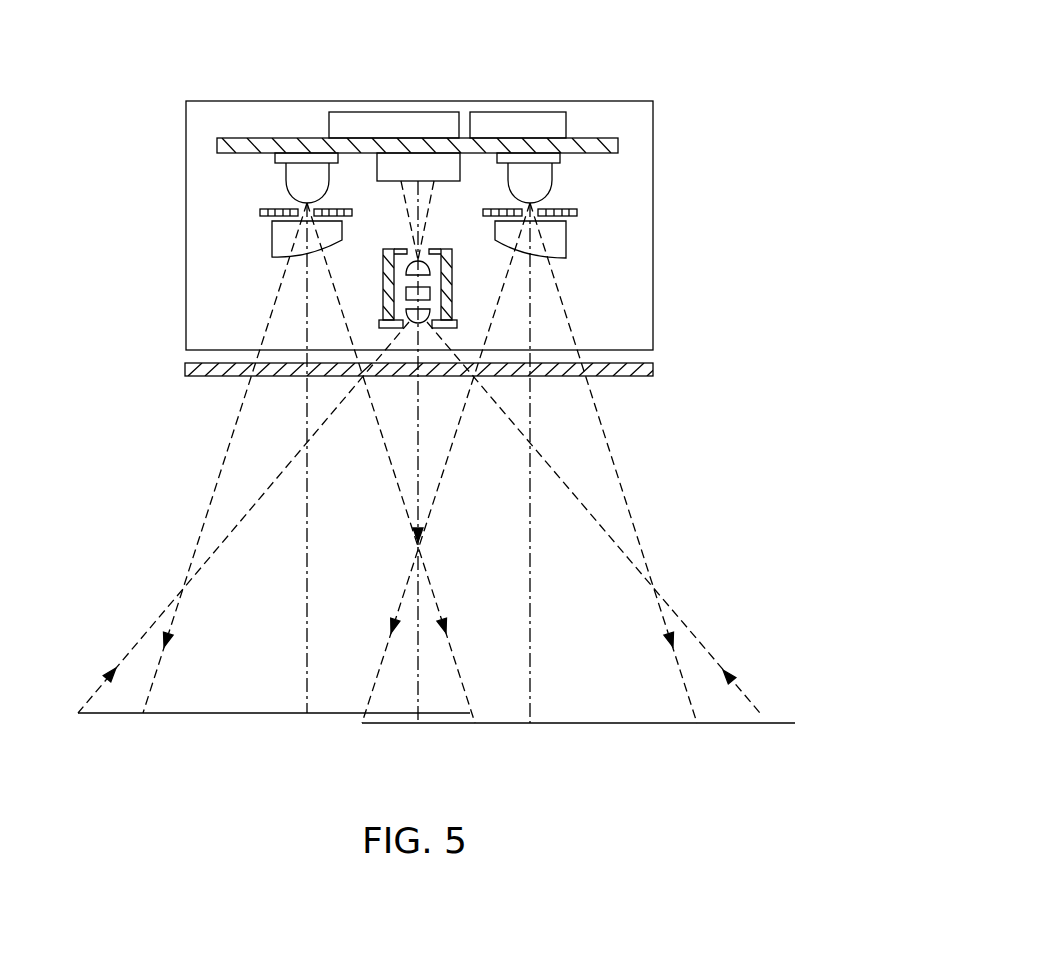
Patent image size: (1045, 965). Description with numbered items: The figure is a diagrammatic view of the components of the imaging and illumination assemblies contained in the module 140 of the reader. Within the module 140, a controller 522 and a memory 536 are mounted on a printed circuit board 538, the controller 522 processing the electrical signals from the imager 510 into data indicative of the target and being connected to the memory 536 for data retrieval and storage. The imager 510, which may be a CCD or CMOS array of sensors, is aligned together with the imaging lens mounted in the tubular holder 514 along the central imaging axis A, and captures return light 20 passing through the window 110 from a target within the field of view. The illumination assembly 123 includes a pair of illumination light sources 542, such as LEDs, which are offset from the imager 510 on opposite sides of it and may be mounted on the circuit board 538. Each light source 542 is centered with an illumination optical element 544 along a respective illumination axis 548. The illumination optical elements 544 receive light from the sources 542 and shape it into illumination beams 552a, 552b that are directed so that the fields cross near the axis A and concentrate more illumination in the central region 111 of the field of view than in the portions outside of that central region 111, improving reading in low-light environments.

The module 140 is at (680, 34).
The controller 522 is at (329, 127).
The memory 536 is at (566, 125).
The printed circuit board 538 is at (618, 145).
The imager 510 is at (456, 182).
The illumination light sources 542 is at (284, 173).
The illumination assembly 123 is at (234, 210).
The illumination optical elements 544 is at (272, 240).
The tubular holder 514 is at (383, 262).
The window 110 is at (186, 368).
The illumination axis 548 is at (306, 590).
The first illumination beam 552a is at (200, 536).
The second illumination beam 552b is at (640, 536).
The central imaging axis A is at (417, 580).
The returned light path 20 is at (148, 630).
The central region 111 is at (437, 724).